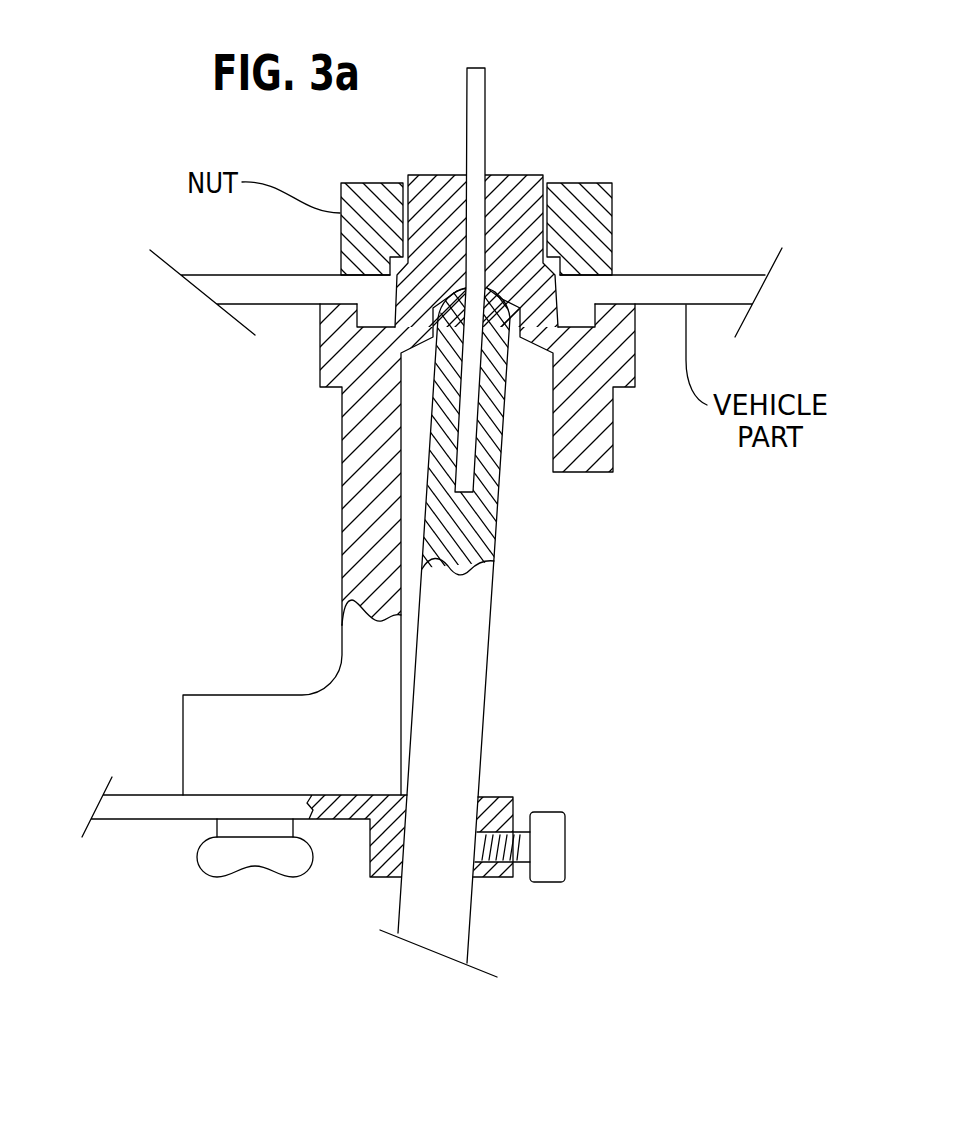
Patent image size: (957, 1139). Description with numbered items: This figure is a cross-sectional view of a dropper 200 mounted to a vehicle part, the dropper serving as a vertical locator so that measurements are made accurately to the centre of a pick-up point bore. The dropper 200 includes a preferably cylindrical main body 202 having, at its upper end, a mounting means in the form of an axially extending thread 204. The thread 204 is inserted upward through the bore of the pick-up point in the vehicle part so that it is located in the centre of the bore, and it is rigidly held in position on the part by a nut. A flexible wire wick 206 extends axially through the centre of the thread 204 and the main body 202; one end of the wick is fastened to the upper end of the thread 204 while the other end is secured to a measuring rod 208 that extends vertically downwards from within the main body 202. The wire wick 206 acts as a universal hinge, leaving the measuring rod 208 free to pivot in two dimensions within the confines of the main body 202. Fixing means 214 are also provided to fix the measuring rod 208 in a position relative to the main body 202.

The dropper 200 is at (200, 605).
The main body 202 is at (342, 465).
The thread 204 is at (527, 231).
The flexible wire wick 206 is at (485, 107).
The measuring rod 208 is at (485, 718).
The fixing means 214 is at (168, 820).